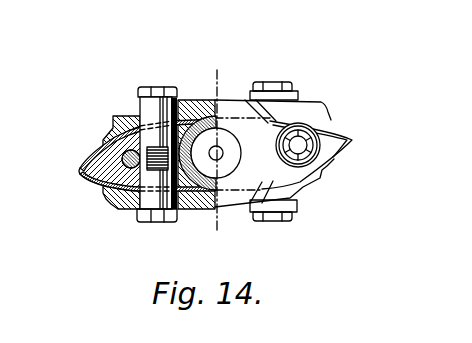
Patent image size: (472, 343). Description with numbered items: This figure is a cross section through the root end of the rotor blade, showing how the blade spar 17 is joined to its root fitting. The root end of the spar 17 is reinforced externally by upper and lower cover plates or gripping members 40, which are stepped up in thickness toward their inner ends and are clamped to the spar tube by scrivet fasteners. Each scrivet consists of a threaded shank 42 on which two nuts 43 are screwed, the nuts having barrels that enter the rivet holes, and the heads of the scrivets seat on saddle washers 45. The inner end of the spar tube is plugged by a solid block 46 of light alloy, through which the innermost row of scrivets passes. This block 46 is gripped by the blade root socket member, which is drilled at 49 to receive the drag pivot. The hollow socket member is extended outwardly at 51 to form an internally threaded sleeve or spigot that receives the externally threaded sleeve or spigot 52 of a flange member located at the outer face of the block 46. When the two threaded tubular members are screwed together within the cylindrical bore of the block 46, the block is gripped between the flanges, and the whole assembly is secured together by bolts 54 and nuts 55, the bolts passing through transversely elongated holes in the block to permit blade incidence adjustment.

The blade spar 17 is at (336, 160).
The cover plates or gripping members 40 is at (110, 198).
The threaded shank 42 is at (130, 209).
The nuts 43 is at (143, 102).
The saddle washers 45 is at (147, 102).
The solid block 46 is at (84, 181).
The drag pivot hole 49 is at (236, 106).
The internally threaded sleeve or spigot 51 is at (201, 98).
The externally threaded sleeve or spigot 52 is at (201, 211).
The bolts 54 is at (124, 156).
The nuts 55 is at (318, 146).